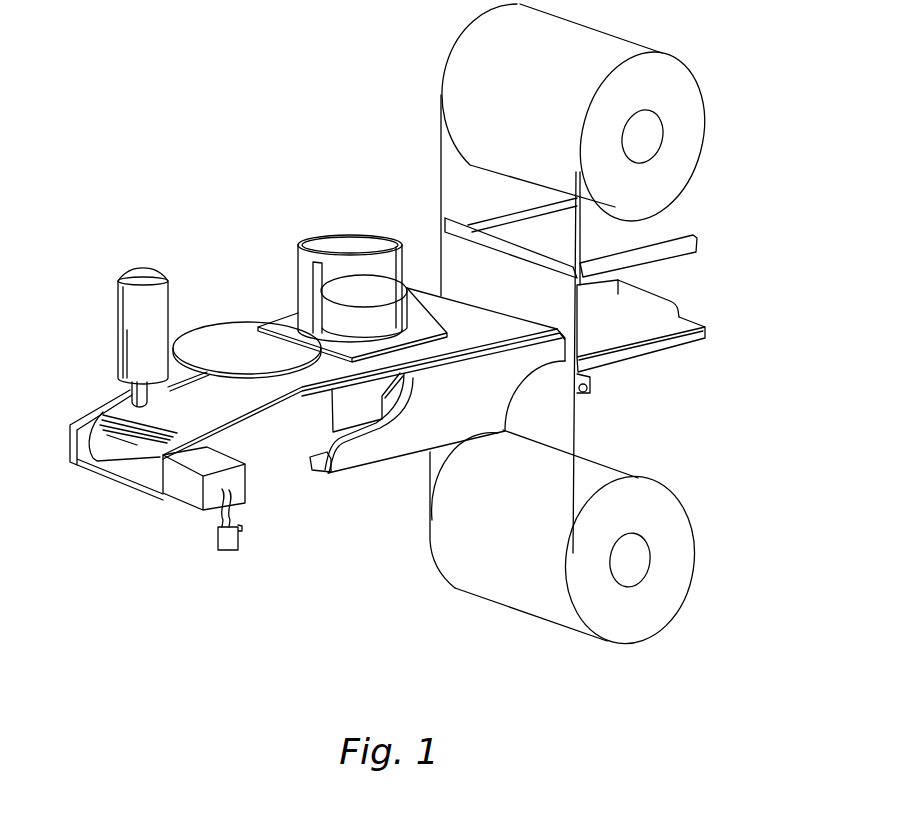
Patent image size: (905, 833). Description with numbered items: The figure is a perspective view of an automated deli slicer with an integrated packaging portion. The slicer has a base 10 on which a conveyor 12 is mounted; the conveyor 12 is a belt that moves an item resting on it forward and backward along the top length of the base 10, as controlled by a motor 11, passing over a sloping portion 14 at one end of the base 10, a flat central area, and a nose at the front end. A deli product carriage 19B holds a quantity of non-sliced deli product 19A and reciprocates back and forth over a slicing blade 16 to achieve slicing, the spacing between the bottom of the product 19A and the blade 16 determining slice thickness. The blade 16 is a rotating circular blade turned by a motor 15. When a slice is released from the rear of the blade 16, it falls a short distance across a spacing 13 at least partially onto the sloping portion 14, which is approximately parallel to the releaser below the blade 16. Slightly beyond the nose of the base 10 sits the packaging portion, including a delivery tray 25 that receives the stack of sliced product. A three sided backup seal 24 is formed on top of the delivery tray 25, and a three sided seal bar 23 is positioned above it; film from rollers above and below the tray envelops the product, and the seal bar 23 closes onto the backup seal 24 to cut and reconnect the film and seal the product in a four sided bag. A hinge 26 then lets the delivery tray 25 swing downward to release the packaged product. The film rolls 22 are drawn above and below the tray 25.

The base 10 is at (395, 448).
The motor 11 is at (196, 498).
The conveyor 12 is at (162, 417).
The spacing 13 is at (207, 407).
The sloping portion 14 is at (273, 463).
The motor 15 is at (137, 293).
The slicing blade 16 is at (230, 333).
The non-sliced deli product 19A is at (353, 289).
The deli product carriage 19B is at (307, 247).
The supply roll of web material 22 is at (512, 125).
The three sided seal bar 23 is at (697, 240).
The three sided backup seal 24 is at (657, 323).
The delivery tray 25 is at (703, 342).
The hinge 26 is at (586, 397).